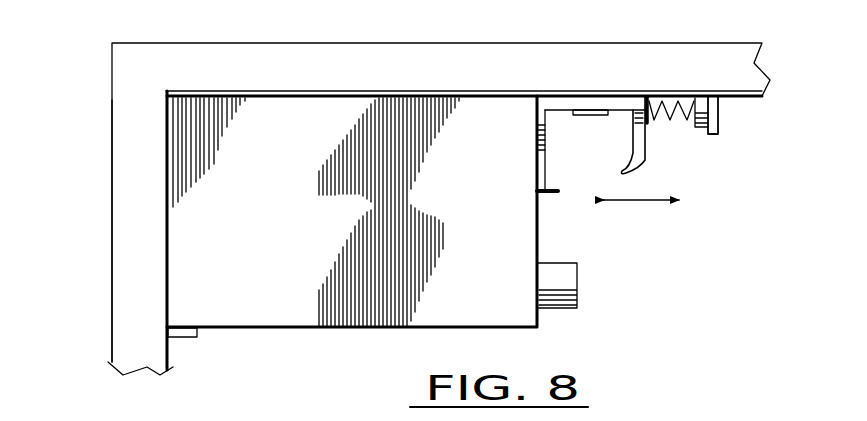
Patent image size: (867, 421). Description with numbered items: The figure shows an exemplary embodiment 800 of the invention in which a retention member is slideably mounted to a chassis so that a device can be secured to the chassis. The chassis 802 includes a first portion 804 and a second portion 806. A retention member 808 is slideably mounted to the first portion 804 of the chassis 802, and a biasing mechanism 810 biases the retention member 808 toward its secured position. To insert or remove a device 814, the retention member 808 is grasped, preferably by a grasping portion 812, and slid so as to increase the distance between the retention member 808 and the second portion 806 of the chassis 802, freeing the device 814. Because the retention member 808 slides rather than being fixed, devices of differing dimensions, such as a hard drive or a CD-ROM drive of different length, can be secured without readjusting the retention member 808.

The exemplary embodiment 800 is at (647, 225).
The chassis 802 is at (262, 32).
The first portion 804 is at (497, 52).
The second portion 806 is at (124, 192).
The retention member 808 is at (547, 126).
The biasing mechanism 810 is at (673, 118).
The grasping portion 812 is at (545, 196).
The device 814 is at (274, 238).